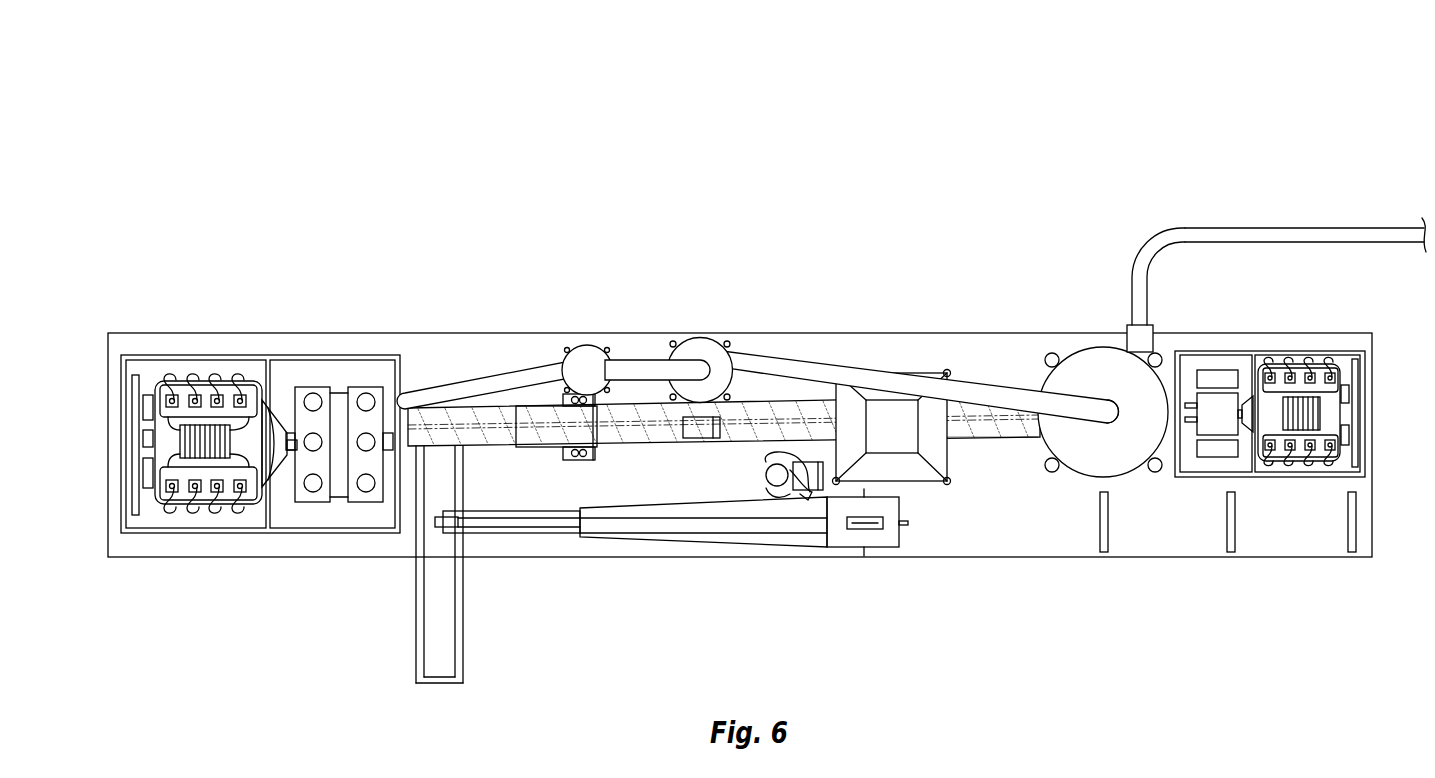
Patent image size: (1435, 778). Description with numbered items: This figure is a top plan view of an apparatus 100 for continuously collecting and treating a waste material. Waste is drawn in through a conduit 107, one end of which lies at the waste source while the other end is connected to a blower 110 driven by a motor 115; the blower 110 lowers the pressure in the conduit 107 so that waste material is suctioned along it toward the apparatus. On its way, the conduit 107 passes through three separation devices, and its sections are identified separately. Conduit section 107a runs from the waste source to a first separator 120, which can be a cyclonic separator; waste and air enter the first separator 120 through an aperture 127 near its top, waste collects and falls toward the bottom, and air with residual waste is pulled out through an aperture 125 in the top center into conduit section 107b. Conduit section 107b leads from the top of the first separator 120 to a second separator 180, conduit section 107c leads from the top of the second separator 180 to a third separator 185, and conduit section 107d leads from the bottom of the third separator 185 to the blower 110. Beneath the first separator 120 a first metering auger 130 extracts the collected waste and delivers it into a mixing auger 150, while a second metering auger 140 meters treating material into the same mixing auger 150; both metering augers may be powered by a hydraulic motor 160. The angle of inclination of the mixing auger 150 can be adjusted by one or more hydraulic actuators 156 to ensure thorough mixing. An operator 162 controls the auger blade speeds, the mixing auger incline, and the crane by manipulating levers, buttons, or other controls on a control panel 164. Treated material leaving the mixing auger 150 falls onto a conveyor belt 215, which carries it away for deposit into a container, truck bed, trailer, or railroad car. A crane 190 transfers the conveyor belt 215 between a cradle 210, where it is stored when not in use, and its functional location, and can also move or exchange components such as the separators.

The apparatus 100 is at (265, 168).
The conduit 107 is at (1302, 198).
The conduit section 107a is at (1207, 228).
The conduit section 107b is at (842, 365).
The conduit section 107c is at (655, 362).
The conduit section 107d is at (453, 385).
The blower 110 is at (323, 390).
The motor 115 is at (207, 392).
The first separator 120 is at (1068, 349).
The aperture 125 is at (1100, 383).
The aperture 127 is at (1166, 339).
The first metering auger 130 is at (973, 440).
The second metering auger 140 is at (930, 375).
The mixing auger 150 is at (478, 446).
The hydraulic actuator 156 is at (583, 458).
The hydraulic motor 160 is at (1305, 370).
The operator 162 is at (776, 488).
The control panel 164 is at (822, 482).
The second separator 180 is at (720, 338).
The third separator 185 is at (570, 348).
The crane 190 is at (873, 541).
The cradle 210 is at (1105, 550).
The conveyor belt 215 is at (438, 667).